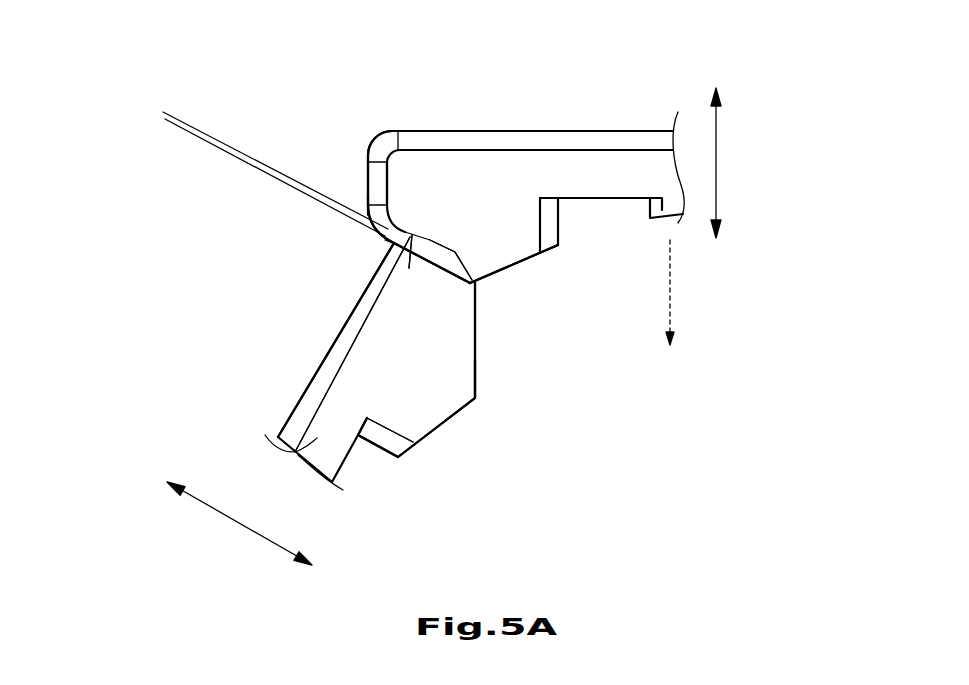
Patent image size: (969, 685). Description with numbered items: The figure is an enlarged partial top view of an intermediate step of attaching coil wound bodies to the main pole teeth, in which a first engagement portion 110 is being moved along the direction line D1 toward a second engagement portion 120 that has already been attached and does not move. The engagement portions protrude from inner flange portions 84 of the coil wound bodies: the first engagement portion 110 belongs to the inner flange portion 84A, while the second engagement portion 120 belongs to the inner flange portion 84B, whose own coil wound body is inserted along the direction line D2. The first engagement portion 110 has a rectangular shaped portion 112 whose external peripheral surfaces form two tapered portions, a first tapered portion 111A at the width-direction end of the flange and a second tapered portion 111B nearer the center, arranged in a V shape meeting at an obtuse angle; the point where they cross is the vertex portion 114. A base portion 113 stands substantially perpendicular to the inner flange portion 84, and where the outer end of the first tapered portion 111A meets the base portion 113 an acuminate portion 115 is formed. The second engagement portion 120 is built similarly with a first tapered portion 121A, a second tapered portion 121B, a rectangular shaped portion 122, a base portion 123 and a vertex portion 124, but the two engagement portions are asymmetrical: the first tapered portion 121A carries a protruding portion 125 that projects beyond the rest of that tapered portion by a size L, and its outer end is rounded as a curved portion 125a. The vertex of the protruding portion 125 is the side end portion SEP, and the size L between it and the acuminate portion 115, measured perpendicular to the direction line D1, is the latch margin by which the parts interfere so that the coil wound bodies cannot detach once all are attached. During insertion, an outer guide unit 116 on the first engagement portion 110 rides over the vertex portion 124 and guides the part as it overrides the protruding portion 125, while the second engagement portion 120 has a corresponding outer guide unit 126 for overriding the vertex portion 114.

The first engagement portion 110 is at (489, 391).
The first tapered portion 111A is at (483, 350).
The second tapered portion 111B is at (417, 445).
The rectangular shaped portion 112 is at (443, 402).
The base portion 113 is at (400, 345).
The vertex portion 114 is at (476, 400).
The acuminate portion 115 is at (469, 280).
The outer guide unit 116 is at (380, 264).
The second engagement portion 120 is at (509, 286).
The first tapered portion 121A is at (410, 268).
The second tapered portion 121B is at (537, 254).
The rectangular shaped portion 122 is at (478, 243).
The base portion 123 is at (433, 180).
The vertex portion 124 is at (455, 295).
The protruding portion 125 is at (401, 230).
The curved portion 125a is at (373, 212).
The outer guide unit 126 is at (381, 146).
The inner flange portion 84 is at (456, 344).
The inner flange portion 84A is at (287, 452).
The inner flange portion 84B is at (605, 177).
The side end portion SEP is at (382, 250).
The size (latch margin) L is at (180, 100).
The direction line D1 is at (238, 525).
The direction line D2 is at (717, 162).